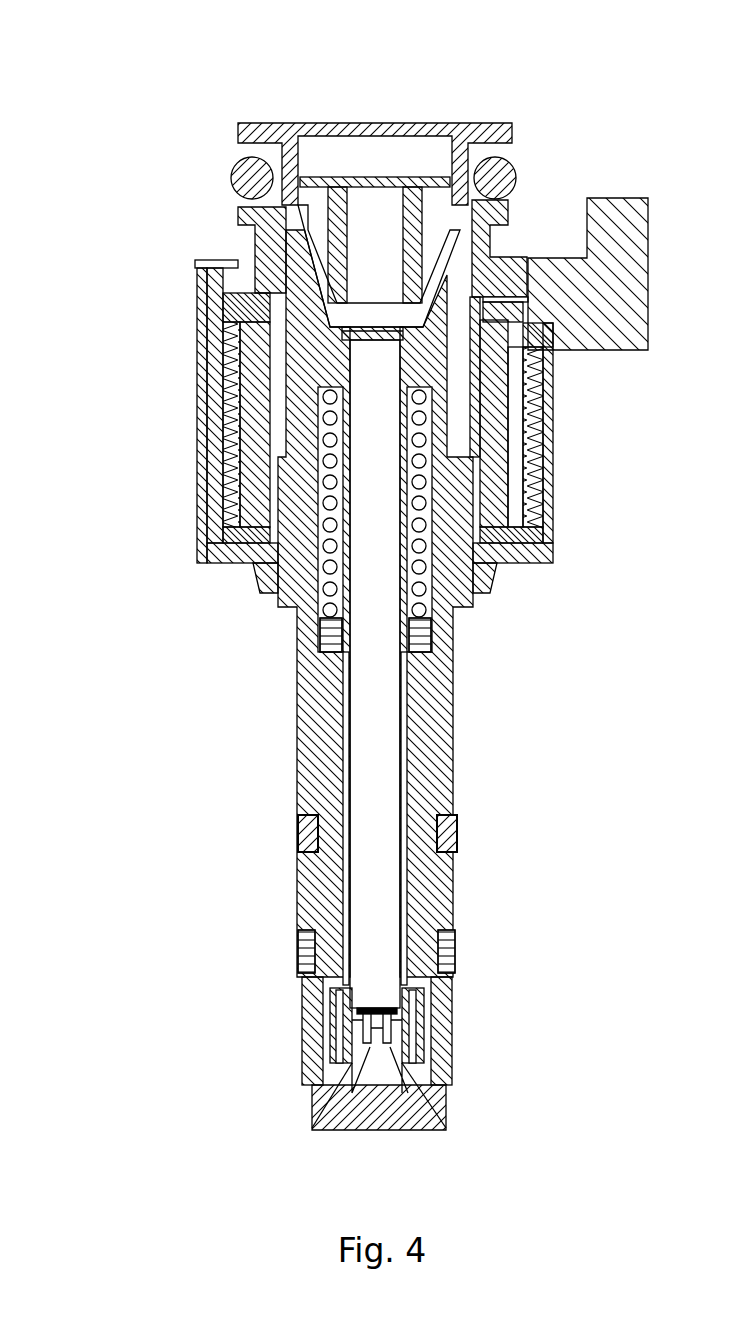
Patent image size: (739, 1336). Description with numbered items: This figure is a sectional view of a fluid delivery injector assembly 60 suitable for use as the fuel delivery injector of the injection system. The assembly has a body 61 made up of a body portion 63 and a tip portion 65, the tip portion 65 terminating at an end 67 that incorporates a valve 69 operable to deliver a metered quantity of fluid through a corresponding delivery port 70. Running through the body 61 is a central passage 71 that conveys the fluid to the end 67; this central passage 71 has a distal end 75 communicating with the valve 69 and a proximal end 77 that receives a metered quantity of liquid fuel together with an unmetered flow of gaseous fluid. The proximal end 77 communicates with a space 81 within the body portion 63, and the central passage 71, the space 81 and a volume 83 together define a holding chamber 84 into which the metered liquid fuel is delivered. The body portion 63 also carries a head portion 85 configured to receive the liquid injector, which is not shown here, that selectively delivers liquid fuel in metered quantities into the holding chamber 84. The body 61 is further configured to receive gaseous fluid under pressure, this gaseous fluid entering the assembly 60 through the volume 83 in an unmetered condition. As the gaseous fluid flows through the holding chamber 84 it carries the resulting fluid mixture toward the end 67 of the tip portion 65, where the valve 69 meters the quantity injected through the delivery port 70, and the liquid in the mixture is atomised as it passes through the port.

The fluid delivery injector assembly 60 is at (178, 176).
The head portion 85 is at (398, 125).
The holding chamber 84 is at (377, 203).
The volume 83 is at (363, 236).
The space 81 is at (360, 315).
The body portion 63 is at (203, 362).
The body 61 is at (203, 482).
The proximal end 77 is at (378, 350).
The tip portion 65 is at (307, 738).
The central passage 71 is at (387, 767).
The distal end 75 is at (378, 1007).
The end 67 is at (450, 1090).
The valve 69 is at (313, 1125).
The delivery port 70 is at (448, 1127).